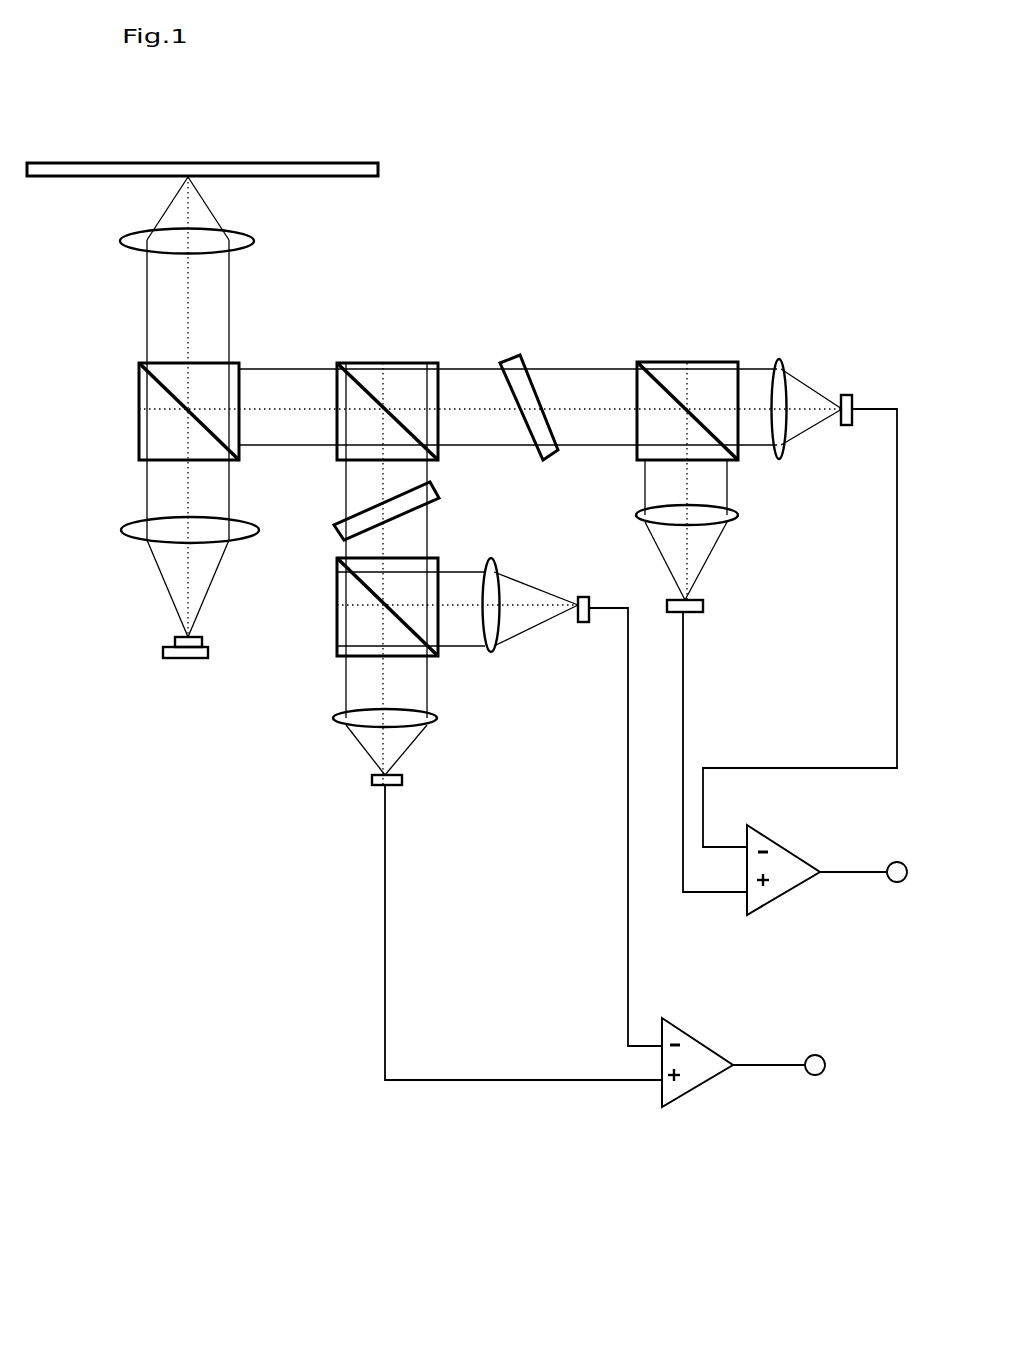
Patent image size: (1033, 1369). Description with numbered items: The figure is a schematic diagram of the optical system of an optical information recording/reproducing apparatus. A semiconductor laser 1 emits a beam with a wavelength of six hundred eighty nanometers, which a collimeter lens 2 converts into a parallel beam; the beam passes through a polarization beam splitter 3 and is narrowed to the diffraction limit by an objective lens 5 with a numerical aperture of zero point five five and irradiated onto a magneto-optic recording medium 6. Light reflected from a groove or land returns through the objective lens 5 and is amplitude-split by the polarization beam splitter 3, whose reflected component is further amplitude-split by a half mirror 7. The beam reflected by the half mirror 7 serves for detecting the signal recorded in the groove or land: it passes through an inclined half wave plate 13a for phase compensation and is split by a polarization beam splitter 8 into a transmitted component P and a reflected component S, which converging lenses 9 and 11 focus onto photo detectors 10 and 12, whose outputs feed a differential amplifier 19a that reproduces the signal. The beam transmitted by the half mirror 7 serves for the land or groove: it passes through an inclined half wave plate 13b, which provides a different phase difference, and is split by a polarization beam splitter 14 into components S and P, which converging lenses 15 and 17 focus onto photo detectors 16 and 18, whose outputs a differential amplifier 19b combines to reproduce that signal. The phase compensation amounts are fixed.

The semiconductor laser 1 is at (183, 658).
The collimeter lens 2 is at (138, 542).
The polarization beam splitter 3 is at (138, 405).
The objective lens 5 is at (240, 239).
The magneto-optic recording medium 6 is at (320, 177).
The half mirror 7 is at (400, 362).
The polarization beam splitter 8 is at (335, 610).
The converging lens 9 is at (420, 728).
The photo detector 10 is at (400, 785).
The converging lens 11 is at (500, 643).
The photo detector 12 is at (592, 595).
The half wave plate 13a is at (435, 503).
The half wave plate 13b is at (518, 355).
The polarization beam splitter 14 is at (667, 360).
The converging lens 15 is at (723, 522).
The photo detector 16 is at (700, 612).
The converging lens 17 is at (781, 360).
The photo detector 18 is at (842, 427).
The differential amplifier 19a is at (693, 1078).
The differential amplifier 19b is at (765, 905).